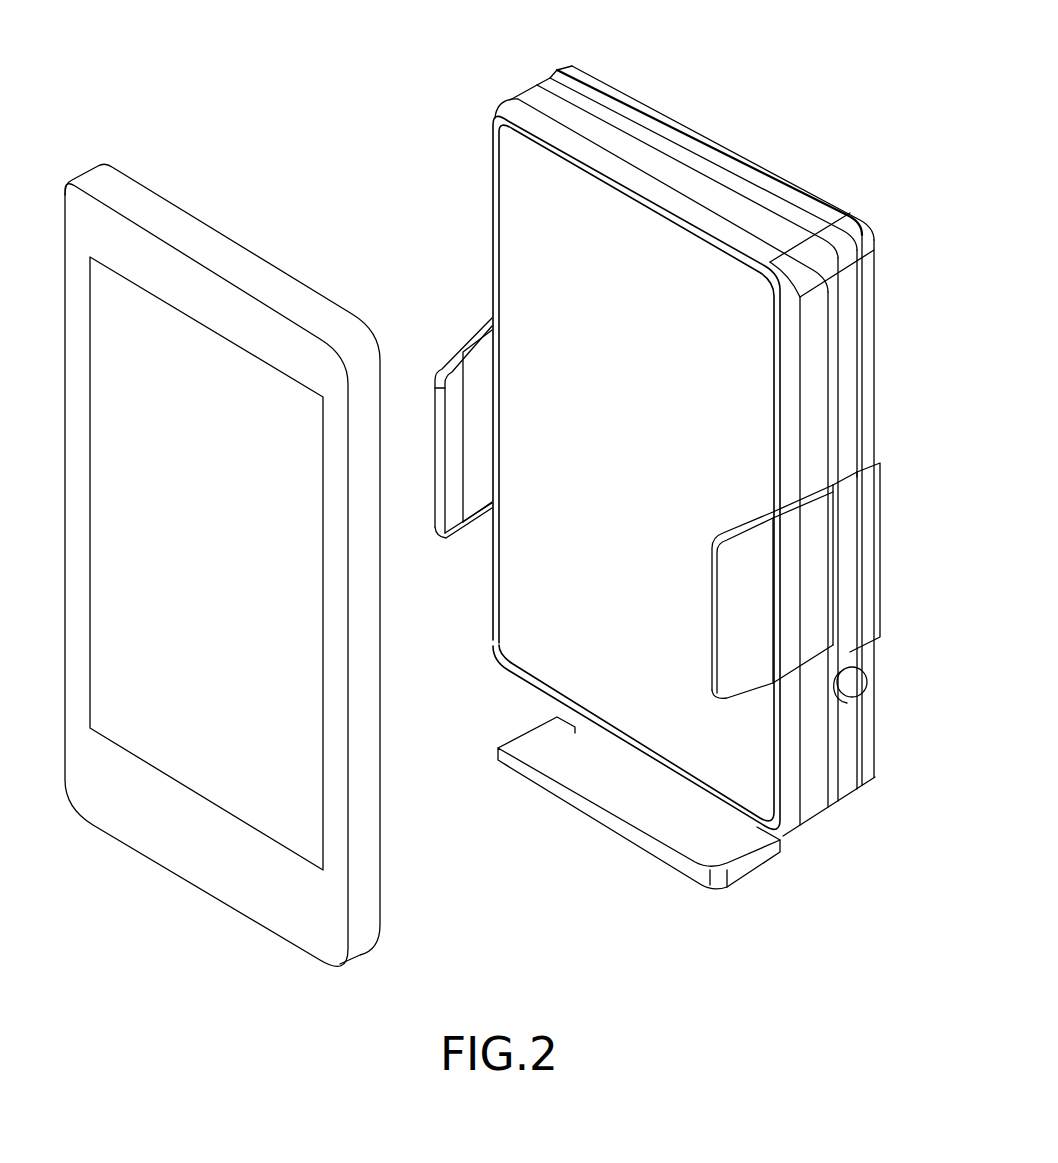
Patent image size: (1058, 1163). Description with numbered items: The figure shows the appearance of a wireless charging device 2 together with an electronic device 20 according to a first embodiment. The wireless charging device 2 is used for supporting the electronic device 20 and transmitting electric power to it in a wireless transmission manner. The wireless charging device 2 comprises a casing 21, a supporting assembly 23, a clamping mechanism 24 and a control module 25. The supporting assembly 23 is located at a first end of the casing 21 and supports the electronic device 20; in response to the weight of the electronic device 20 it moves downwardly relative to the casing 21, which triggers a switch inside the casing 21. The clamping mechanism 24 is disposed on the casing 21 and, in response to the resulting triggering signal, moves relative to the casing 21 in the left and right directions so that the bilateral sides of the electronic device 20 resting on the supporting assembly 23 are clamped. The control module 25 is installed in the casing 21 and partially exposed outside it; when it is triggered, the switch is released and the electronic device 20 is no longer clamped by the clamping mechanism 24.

The wireless charging device 2 is at (761, 129).
The electronic device 20 is at (232, 258).
The casing 21 is at (533, 102).
The supporting assembly 23 is at (633, 803).
The clamping mechanism 24 is at (807, 590).
The control module 25 is at (861, 688).